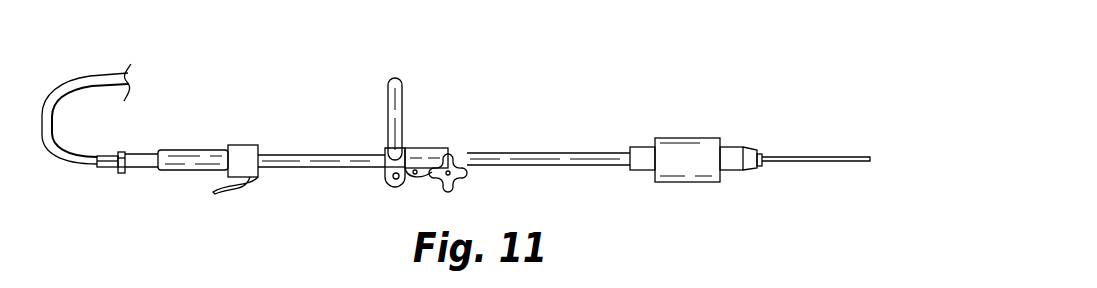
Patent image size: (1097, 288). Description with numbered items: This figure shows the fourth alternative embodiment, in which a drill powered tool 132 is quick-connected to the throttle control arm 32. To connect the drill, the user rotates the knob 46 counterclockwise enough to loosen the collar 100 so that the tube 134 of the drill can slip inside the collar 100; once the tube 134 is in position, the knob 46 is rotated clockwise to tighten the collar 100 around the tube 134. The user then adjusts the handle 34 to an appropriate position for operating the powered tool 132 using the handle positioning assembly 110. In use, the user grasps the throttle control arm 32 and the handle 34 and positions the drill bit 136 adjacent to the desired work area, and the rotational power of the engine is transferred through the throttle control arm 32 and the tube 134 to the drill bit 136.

The throttle control arm 32 is at (287, 168).
The handle 34 is at (388, 80).
The knob 46 is at (456, 185).
The collar 100 is at (428, 148).
The handle positioning assembly 110 is at (392, 182).
The drill powered tool 132 is at (675, 138).
The tube 134 is at (482, 153).
The drill bit 136 is at (835, 157).